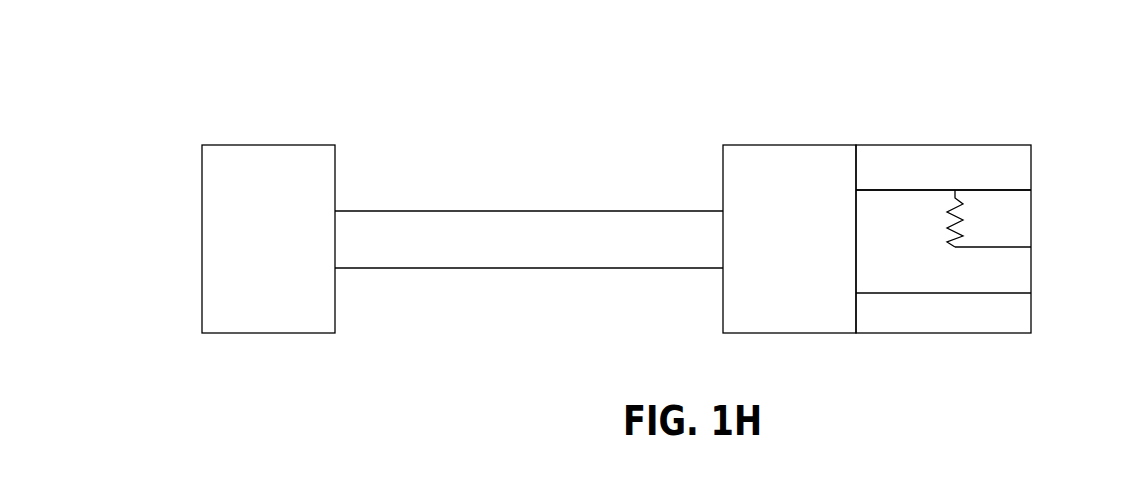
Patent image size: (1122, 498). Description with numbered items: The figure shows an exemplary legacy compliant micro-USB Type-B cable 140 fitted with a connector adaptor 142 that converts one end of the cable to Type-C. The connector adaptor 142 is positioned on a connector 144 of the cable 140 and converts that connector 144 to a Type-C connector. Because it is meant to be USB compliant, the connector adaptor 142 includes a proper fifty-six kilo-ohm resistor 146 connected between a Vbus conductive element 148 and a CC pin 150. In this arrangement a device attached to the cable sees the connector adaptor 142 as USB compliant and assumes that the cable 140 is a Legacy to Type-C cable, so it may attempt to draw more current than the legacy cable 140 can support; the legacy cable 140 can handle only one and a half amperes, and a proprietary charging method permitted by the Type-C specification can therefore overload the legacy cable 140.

The legacy compliant micro-USB Type-B cable 140 is at (615, 93).
The connector adaptor 142 is at (903, 145).
The connector 144 is at (778, 145).
The resistor 146 is at (947, 228).
The Vbus conductive element 148 is at (1003, 189).
The CC pin 150 is at (1010, 247).